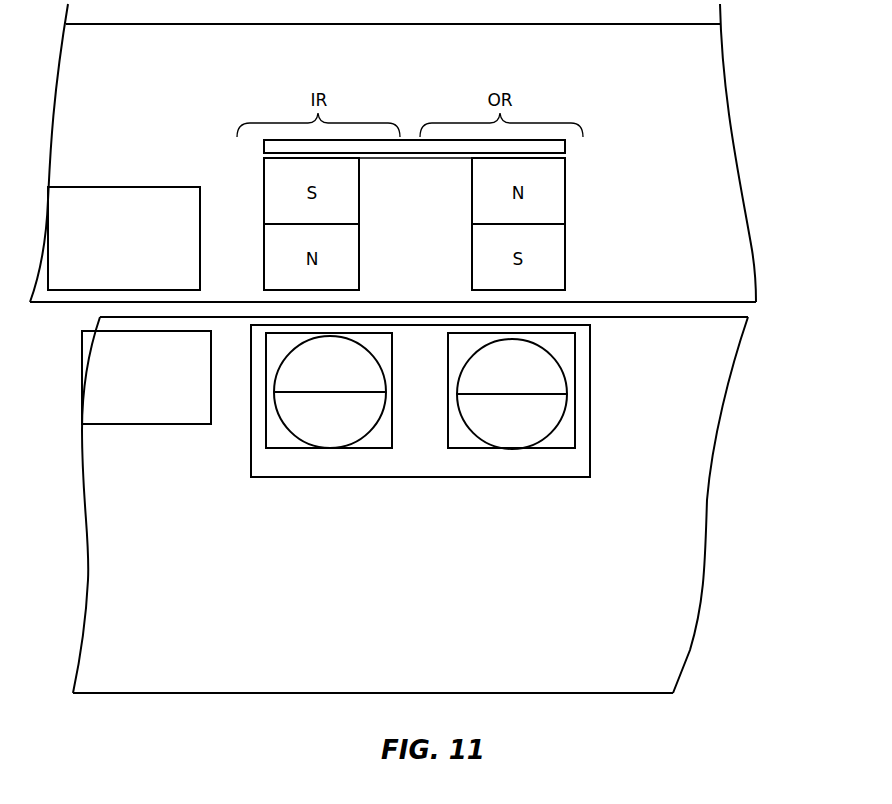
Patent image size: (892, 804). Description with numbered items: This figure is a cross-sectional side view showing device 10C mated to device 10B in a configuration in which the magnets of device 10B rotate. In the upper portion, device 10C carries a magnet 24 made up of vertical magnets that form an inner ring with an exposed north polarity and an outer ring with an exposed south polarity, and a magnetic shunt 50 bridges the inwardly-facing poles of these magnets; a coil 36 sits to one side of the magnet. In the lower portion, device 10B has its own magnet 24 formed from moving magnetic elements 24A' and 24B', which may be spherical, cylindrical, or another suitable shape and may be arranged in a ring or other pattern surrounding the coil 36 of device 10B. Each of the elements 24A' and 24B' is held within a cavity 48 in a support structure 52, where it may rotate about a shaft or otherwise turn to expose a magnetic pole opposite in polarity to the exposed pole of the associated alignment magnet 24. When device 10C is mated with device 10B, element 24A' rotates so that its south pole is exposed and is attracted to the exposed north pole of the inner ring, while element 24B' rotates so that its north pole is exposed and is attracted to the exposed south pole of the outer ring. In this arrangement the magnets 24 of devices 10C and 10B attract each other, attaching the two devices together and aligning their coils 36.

The third device 10C is at (733, 208).
The second device 10B is at (697, 535).
The coil 36 is at (128, 200).
The magnetic shunt 50 is at (556, 149).
The magnet 24 is at (667, 182).
The support structure 52 is at (535, 467).
The cavity 48 is at (455, 417).
The magnetic element 24A' is at (301, 424).
The magnetic element 24B' is at (483, 425).